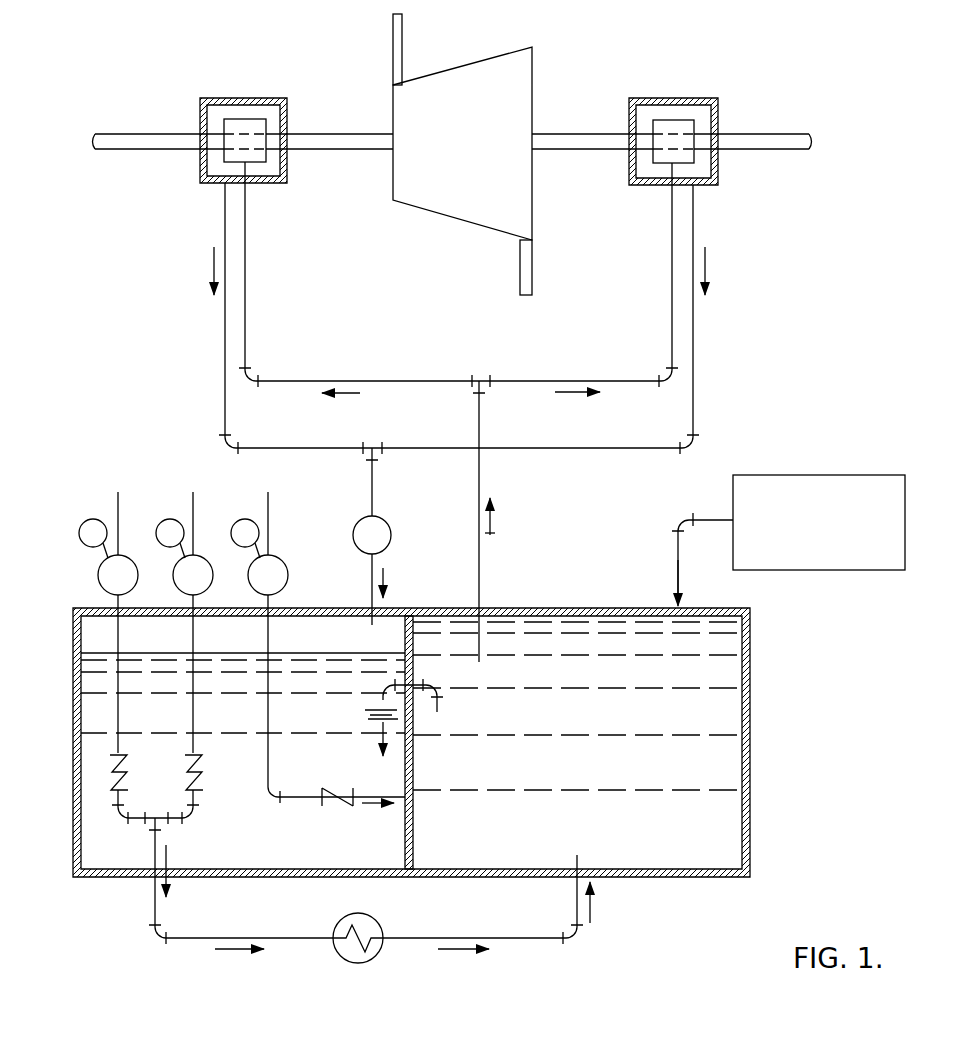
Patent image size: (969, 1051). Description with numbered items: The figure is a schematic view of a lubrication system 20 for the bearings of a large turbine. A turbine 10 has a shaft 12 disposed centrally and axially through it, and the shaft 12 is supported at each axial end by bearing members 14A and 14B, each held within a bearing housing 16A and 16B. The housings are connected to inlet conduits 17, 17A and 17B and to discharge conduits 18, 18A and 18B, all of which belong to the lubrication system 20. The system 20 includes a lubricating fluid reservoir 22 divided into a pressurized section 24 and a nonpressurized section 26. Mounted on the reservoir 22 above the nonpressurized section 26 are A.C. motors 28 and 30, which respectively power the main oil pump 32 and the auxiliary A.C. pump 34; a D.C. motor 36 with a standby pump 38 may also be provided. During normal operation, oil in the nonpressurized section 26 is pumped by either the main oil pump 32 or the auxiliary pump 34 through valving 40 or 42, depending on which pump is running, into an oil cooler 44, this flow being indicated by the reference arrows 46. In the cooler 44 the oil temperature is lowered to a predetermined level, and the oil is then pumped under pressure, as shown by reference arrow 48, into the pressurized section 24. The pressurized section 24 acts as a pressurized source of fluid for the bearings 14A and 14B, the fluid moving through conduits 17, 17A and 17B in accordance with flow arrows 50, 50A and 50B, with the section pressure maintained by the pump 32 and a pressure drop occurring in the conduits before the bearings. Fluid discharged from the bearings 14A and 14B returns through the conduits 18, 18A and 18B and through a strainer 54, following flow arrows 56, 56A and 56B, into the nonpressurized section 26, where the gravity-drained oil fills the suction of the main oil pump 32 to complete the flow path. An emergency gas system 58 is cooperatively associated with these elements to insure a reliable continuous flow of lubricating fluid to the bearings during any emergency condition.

The turbine 10 is at (476, 151).
The shaft 12 is at (324, 148).
The bearing member 14A is at (254, 160).
The bearing member 14B is at (662, 161).
The bearing housing 16A is at (263, 98).
The bearing housing 16B is at (660, 98).
The inlet conduit 17 is at (482, 473).
The inlet conduit 17A is at (245, 308).
The inlet conduit 17B is at (671, 304).
The discharge conduit 18 is at (370, 485).
The discharge conduit 18A is at (223, 354).
The discharge conduit 18B is at (695, 344).
The lubrication system 20 is at (331, 522).
The lubricating fluid reservoir 22 is at (797, 824).
The pressurized section 24 is at (599, 766).
The nonpressurized section 26 is at (242, 722).
The A.C. motor 28 is at (83, 523).
The A.C. motor 30 is at (167, 523).
The main oil pump 32 is at (98, 584).
The auxiliary A.C. pump 34 is at (182, 592).
The D.C. motor 36 is at (241, 523).
The standby pump 38 is at (287, 586).
The valving 40 is at (124, 775).
The valving 42 is at (197, 775).
The oil cooler 44 is at (356, 961).
The flow arrows 46 is at (166, 856).
The flow arrow 48 is at (590, 910).
The flow arrow 50 is at (493, 530).
The flow arrow 50A is at (347, 394).
The flow arrow 50B is at (578, 394).
The strainer 54 is at (394, 542).
The flow arrow 56 is at (384, 589).
The flow arrow 56A is at (212, 266).
The flow arrow 56B is at (706, 268).
The emergency gas system 58 is at (871, 465).